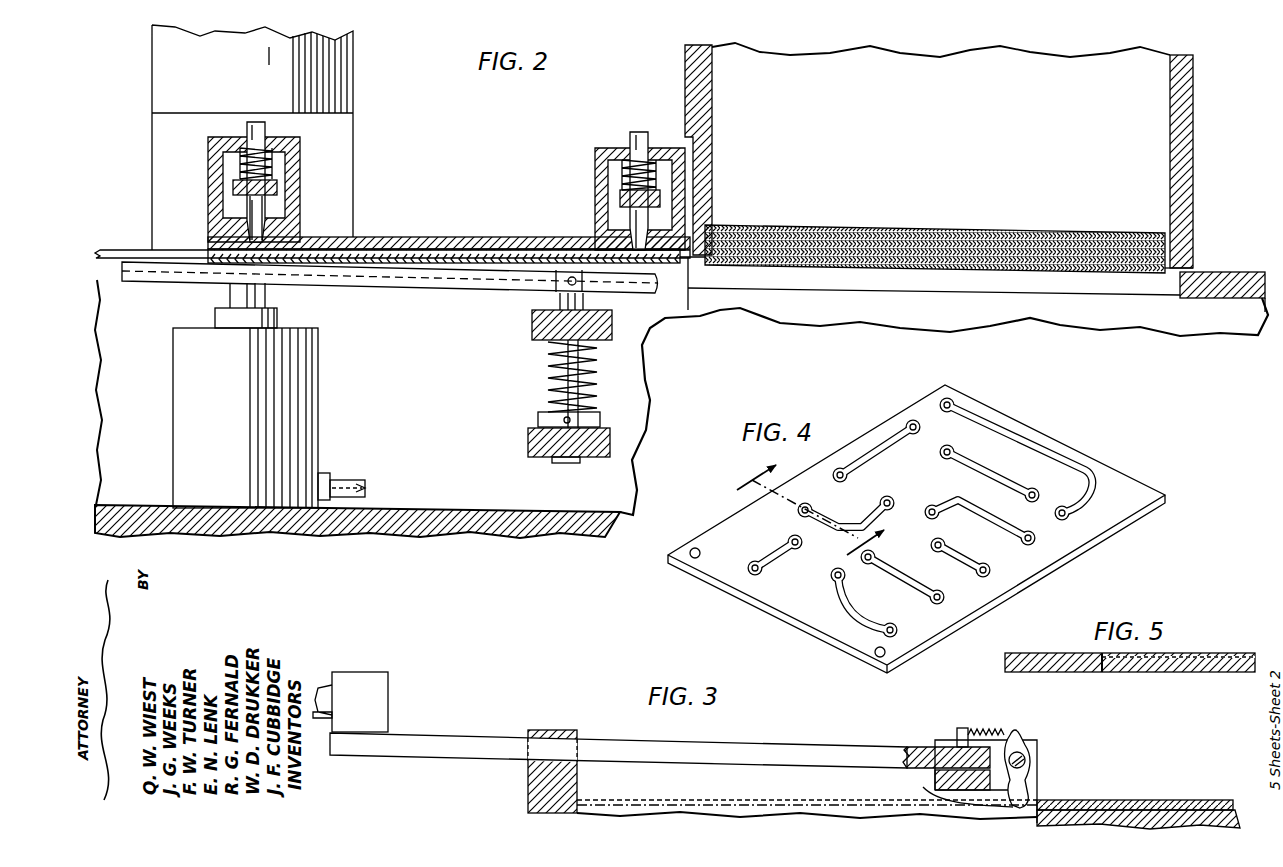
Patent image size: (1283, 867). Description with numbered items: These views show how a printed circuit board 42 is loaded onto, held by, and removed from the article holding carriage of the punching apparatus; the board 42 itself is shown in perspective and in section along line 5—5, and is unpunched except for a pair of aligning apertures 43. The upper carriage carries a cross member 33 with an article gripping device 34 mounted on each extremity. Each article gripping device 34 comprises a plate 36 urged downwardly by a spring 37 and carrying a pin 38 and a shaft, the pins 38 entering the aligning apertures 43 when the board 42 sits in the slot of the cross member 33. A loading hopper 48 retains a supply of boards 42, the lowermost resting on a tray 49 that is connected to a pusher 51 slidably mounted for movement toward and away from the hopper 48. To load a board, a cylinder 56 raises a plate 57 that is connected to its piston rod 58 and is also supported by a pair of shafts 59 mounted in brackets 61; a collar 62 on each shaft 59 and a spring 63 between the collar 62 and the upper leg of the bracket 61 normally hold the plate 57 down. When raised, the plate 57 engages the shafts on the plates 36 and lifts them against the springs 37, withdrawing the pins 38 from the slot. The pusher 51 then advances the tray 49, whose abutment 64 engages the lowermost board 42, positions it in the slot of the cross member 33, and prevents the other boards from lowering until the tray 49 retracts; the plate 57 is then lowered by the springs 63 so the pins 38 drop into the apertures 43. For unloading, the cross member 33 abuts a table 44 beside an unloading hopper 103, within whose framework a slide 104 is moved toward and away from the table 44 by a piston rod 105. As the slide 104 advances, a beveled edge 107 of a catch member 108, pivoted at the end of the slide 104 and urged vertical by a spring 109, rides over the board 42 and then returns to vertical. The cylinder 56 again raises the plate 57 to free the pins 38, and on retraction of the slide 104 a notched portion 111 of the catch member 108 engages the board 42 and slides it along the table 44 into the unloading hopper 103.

In FIG. 2, the cross member 33 is at (445, 240).
In FIG. 2, the article gripping device 34 is at (300, 148).
In FIG. 2, the plate 36 is at (233, 215).
In FIG. 2, the spring 37 is at (630, 148).
In FIG. 2, the pin 38 is at (270, 222).
In FIG. 2, the printed circuit board 42 is at (1104, 232).
In FIG. 4, the printed circuit board 42 is at (1122, 481).
In FIG. 5, the printed circuit board 42 is at (1250, 655).
In FIG. 3, the printed circuit board 42 is at (688, 797).
In FIG. 4, the aligning apertures 43 is at (690, 558).
In FIG. 5, the aligning apertures 43 is at (1102, 668).
In FIG. 2, the table 44 is at (97, 251).
In FIG. 3, the table 44 is at (1230, 808).
In FIG. 2, the loading hopper 48 is at (1180, 148).
In FIG. 2, the tray 49 is at (1106, 320).
In FIG. 2, the pusher 51 is at (1235, 273).
In FIG. 2, the cylinder 56 is at (300, 409).
In FIG. 2, the plate 57 is at (440, 296).
In FIG. 2, the piston rod 58 is at (265, 292).
In FIG. 2, the shaft 59 is at (560, 300).
In FIG. 2, the bracket 61 is at (545, 322).
In FIG. 2, the collar 62 is at (535, 441).
In FIG. 2, the spring 63 is at (548, 395).
In FIG. 2, the abutment 64 is at (1188, 268).
In FIG. 4, the section line 5- 5 is at (798, 516).
In FIG. 3, the unloading hopper 103 is at (537, 783).
In FIG. 3, the slide 104 is at (433, 742).
In FIG. 3, the piston rod 105 is at (326, 682).
In FIG. 3, the beveled edge 107 is at (1046, 808).
In FIG. 3, the catch member 108 is at (1032, 763).
In FIG. 3, the spring 109 is at (994, 730).
In FIG. 3, the notched portion 111 is at (950, 789).